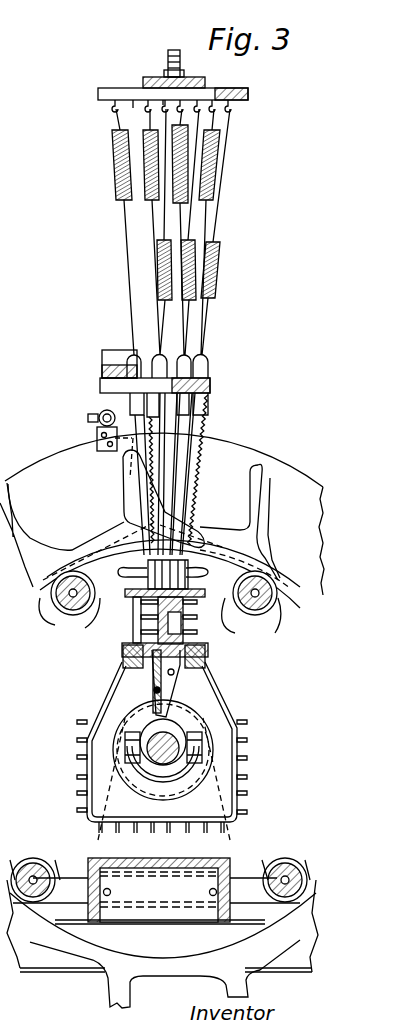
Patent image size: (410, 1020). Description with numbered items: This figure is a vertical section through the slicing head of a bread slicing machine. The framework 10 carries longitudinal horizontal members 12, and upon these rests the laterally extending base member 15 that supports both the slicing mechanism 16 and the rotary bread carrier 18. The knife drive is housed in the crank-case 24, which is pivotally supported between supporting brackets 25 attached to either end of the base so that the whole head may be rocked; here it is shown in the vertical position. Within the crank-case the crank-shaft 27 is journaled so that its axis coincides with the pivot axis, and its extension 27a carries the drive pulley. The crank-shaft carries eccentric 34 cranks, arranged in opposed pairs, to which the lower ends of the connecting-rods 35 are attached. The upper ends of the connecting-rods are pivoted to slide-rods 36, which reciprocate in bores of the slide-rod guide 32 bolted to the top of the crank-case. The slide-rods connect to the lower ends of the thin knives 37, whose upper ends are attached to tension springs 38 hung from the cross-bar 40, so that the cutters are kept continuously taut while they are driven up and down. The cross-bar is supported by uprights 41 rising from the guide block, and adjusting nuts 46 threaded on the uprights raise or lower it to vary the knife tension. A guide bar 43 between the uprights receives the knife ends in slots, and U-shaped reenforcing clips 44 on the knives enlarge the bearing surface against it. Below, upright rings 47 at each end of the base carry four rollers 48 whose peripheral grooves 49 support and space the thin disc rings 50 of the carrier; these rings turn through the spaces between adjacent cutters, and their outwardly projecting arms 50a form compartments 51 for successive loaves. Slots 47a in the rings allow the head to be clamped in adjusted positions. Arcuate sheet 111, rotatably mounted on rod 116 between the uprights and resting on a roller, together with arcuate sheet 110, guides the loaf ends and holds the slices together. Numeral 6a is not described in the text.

The framework 10 is at (10, 1016).
The longitudinal horizontal members 12 is at (60, 960).
The base member 15 is at (150, 868).
The slicing mechanism 16 is at (231, 418).
The rotary bread carrier 18 is at (280, 485).
The crank-case 24 is at (223, 695).
The supporting brackets 25 is at (240, 845).
The crank-shaft 27 is at (170, 750).
The extension 27a is at (19, 742).
The slide-rod guide 32 is at (198, 640).
The eccentric 34 is at (147, 750).
The connecting-rods 35 is at (157, 692).
The slide-rods 36 is at (190, 620).
The knives 37 is at (196, 442).
The tension springs 38 is at (222, 262).
The cross-bar 40 is at (224, 81).
The uprights 41 is at (170, 323).
The guide bar 43 is at (212, 385).
The U-shaped reenforcing clips 44 is at (208, 372).
The adjusting nuts 46 is at (163, 78).
The rings 47 is at (48, 645).
The slots 47a is at (126, 606).
The rollers 48 is at (87, 615).
The peripheral grooves 49 is at (70, 623).
The disc rings 50 is at (268, 577).
The outwardly projecting arms 50a is at (265, 505).
The compartments 51 is at (53, 497).
The arcuate sheet 110 is at (229, 497).
The arcuate sheet 111 is at (116, 515).
The rod 116 is at (100, 406).
The part 6a is at (9, 800).